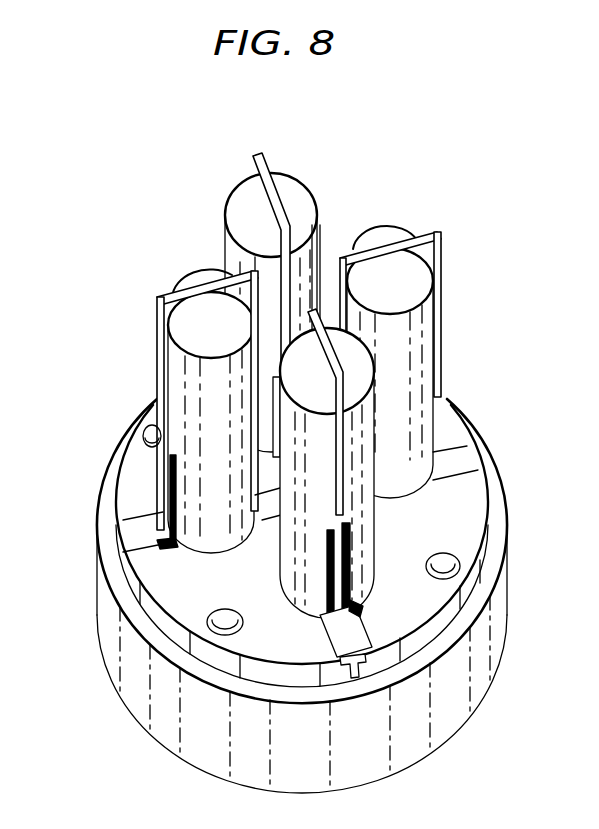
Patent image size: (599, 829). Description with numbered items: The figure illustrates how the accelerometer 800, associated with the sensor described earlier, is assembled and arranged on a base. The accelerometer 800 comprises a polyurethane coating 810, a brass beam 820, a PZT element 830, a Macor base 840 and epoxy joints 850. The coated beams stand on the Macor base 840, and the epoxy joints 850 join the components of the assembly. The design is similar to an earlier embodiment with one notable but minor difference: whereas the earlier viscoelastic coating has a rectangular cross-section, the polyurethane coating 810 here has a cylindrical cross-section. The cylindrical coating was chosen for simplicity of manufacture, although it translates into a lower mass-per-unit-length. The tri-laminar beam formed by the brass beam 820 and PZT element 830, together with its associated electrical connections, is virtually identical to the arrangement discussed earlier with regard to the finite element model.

The accelerometer 800 is at (463, 172).
The polyurethane coating 810 is at (190, 333).
The brass beam 820 is at (150, 434).
The PZT element 830 is at (350, 565).
The Macor base 840 is at (120, 640).
The epoxy joints 850 is at (362, 657).